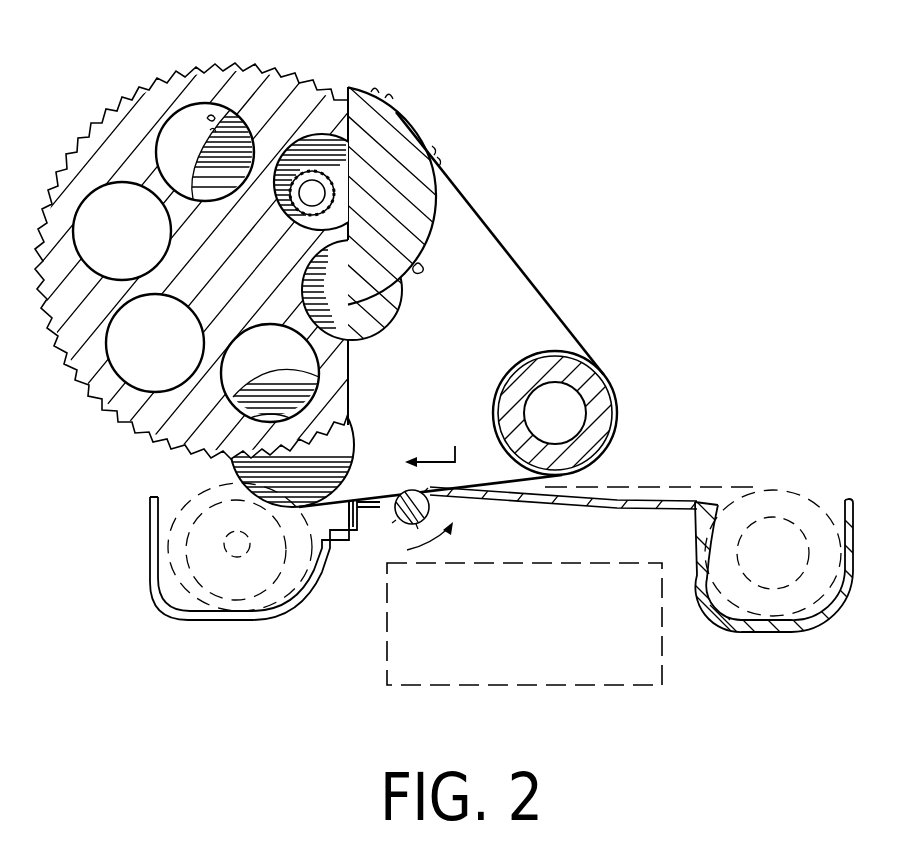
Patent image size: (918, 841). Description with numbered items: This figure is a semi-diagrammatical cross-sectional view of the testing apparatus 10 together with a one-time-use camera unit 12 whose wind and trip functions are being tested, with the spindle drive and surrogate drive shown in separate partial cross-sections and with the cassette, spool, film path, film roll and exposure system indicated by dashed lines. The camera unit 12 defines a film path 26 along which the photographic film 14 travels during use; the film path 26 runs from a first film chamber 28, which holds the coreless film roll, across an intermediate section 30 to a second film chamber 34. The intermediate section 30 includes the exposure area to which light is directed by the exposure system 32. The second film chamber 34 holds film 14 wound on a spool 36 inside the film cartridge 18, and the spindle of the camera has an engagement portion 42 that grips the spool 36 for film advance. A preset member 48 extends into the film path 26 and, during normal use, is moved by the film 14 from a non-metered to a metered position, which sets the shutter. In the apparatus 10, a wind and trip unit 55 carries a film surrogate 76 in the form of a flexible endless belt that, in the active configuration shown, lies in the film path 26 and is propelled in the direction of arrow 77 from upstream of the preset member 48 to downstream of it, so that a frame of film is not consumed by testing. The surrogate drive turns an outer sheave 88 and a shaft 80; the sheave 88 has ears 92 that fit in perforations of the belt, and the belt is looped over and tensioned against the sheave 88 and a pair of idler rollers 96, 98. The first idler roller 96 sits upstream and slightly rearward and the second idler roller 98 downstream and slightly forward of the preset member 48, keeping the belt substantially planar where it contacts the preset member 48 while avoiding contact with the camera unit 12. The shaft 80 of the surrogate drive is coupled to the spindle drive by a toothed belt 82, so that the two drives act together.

The apparatus 10 is at (446, 373).
The camera unit 12 is at (838, 600).
The film 14 is at (642, 487).
The film cartridge 18 is at (295, 560).
The film path 26 is at (786, 490).
The first film chamber 28 is at (786, 559).
The intermediate section 30 is at (560, 512).
The exposure system 32 is at (662, 672).
The second film chamber 34 is at (170, 495).
The spool 36 is at (233, 593).
The engagement portion 42 is at (212, 600).
The preset member 48 is at (433, 510).
The wind and trip unit 55 is at (414, 128).
The film surrogate 76 is at (545, 295).
The arrow 77 is at (437, 442).
The shaft 80 is at (315, 185).
The toothed belt 82 is at (370, 300).
The sheave 88 is at (433, 210).
The ears 92 is at (210, 128).
The first idler roller 96 is at (530, 360).
The second idler roller 98 is at (360, 428).